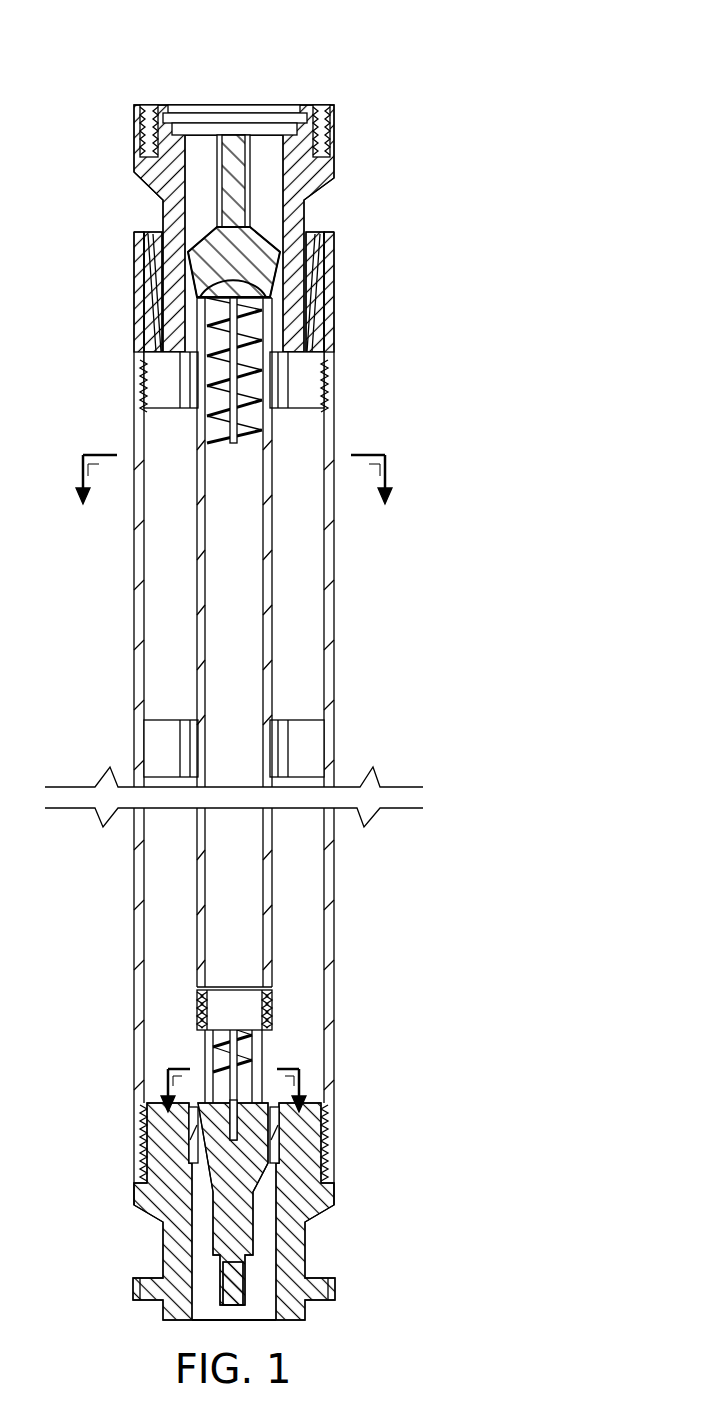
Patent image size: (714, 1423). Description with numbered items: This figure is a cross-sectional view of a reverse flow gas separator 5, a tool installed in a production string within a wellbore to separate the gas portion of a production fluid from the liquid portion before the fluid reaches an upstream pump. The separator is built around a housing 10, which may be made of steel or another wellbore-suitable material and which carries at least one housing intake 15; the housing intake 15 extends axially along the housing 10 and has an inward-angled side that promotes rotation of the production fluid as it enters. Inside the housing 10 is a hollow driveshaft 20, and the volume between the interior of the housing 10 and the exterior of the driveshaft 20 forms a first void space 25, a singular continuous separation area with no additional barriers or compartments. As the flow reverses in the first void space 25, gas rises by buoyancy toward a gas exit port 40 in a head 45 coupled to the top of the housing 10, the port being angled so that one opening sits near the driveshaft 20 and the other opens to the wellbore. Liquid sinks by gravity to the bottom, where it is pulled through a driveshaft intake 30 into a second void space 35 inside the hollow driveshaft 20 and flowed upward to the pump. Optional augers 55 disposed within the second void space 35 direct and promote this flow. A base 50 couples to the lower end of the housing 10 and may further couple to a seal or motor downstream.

The reverse flow gas separator 5 is at (337, 78).
The housing 10 is at (327, 870).
The housing intake 15 is at (140, 603).
The driveshaft 20 is at (190, 640).
The first void space 25 is at (152, 433).
The driveshaft intake 30 is at (210, 1047).
The second void space 35 is at (220, 566).
The gas exit port 40 is at (148, 240).
The head 45 is at (142, 178).
The base 50 is at (175, 1242).
The auger 55 is at (222, 443).